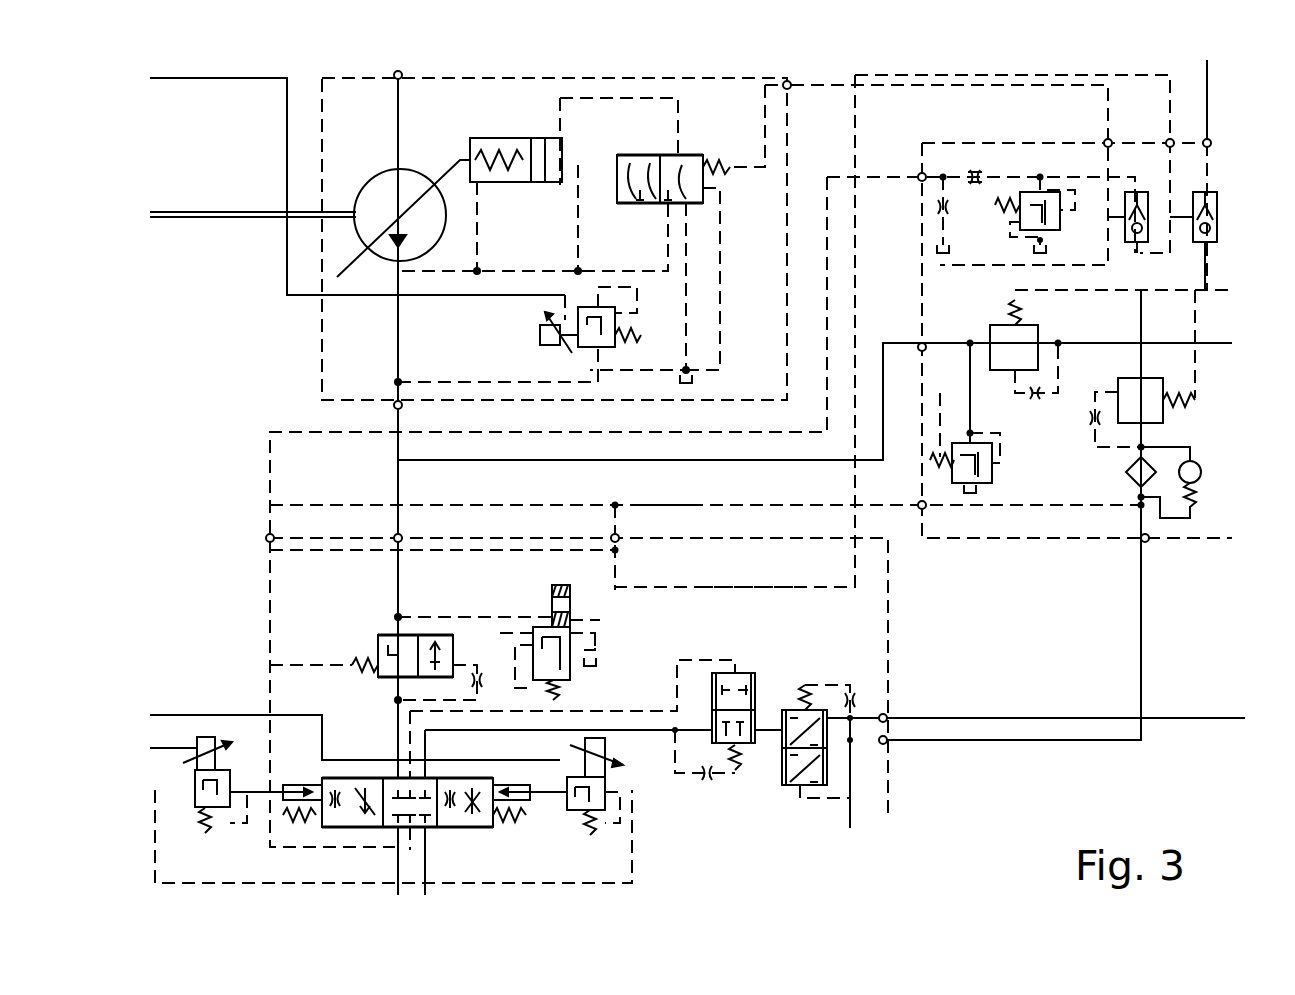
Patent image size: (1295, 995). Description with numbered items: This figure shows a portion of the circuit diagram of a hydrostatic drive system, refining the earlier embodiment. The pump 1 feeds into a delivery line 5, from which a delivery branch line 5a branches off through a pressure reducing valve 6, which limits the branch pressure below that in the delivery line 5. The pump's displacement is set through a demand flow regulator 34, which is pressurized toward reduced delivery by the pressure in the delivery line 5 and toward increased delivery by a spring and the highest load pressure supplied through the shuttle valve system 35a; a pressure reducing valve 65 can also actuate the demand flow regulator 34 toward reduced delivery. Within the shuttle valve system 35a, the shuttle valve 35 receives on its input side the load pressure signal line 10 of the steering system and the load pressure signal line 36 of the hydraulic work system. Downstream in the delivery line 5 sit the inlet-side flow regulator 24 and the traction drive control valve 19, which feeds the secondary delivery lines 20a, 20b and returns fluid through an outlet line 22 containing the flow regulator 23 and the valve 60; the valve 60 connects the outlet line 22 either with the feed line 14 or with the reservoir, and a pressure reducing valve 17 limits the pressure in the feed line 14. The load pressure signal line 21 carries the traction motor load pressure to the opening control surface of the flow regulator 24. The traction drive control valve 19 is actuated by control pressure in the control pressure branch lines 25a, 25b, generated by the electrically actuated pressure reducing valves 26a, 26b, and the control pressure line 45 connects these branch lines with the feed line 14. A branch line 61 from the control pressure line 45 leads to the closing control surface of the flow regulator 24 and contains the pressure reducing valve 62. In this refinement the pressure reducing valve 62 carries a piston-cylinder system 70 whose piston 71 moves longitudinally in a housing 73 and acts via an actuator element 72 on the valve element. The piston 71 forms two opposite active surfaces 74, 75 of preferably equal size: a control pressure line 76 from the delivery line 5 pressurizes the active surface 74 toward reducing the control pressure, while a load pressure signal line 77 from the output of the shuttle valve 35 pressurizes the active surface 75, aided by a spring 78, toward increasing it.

The pump 1 is at (386, 181).
The demand flow regulator 34 is at (665, 125).
The pressure reducing valve 65 is at (568, 372).
The load pressure signal line 36 is at (1207, 98).
The shuttle valve 35 is at (1217, 217).
The load pressure signal line 10 is at (1196, 298).
The pressure reducing valve 6 is at (1000, 335).
The shuttle valve system 35a is at (1150, 416).
The pressure reducing valve 17 is at (1189, 478).
The delivery line 5 is at (398, 476).
The delivery branch line 5a is at (558, 462).
The control pressure line 45 is at (658, 502).
The piston-cylinder system 70 is at (571, 583).
The housing 73 is at (546, 580).
The spring 78 is at (571, 586).
The load pressure signal line 77 is at (800, 588).
The control pressure line 76 is at (420, 617).
The active surface 74 is at (490, 633).
The active surface 75 is at (552, 589).
The piston 71 is at (540, 612).
The actuator element 72 is at (573, 618).
The branch line 61 is at (615, 640).
The load pressure signal line 21 is at (270, 686).
The flow regulator 24 is at (388, 648).
The pressure reducing valve 62 is at (572, 668).
The flow regulator 23 is at (742, 680).
The control pressure branch line 25b is at (244, 716).
The control pressure branch line 25a is at (175, 740).
The outlet line 22 is at (650, 733).
The feed line 14 is at (910, 745).
The pressure reducing valve 26a is at (190, 806).
The traction drive control valve 19 is at (376, 830).
The secondary delivery line 20a is at (400, 868).
The secondary delivery line 20b is at (430, 868).
The pressure reducing valve 26b is at (605, 806).
The valve 60 is at (790, 787).